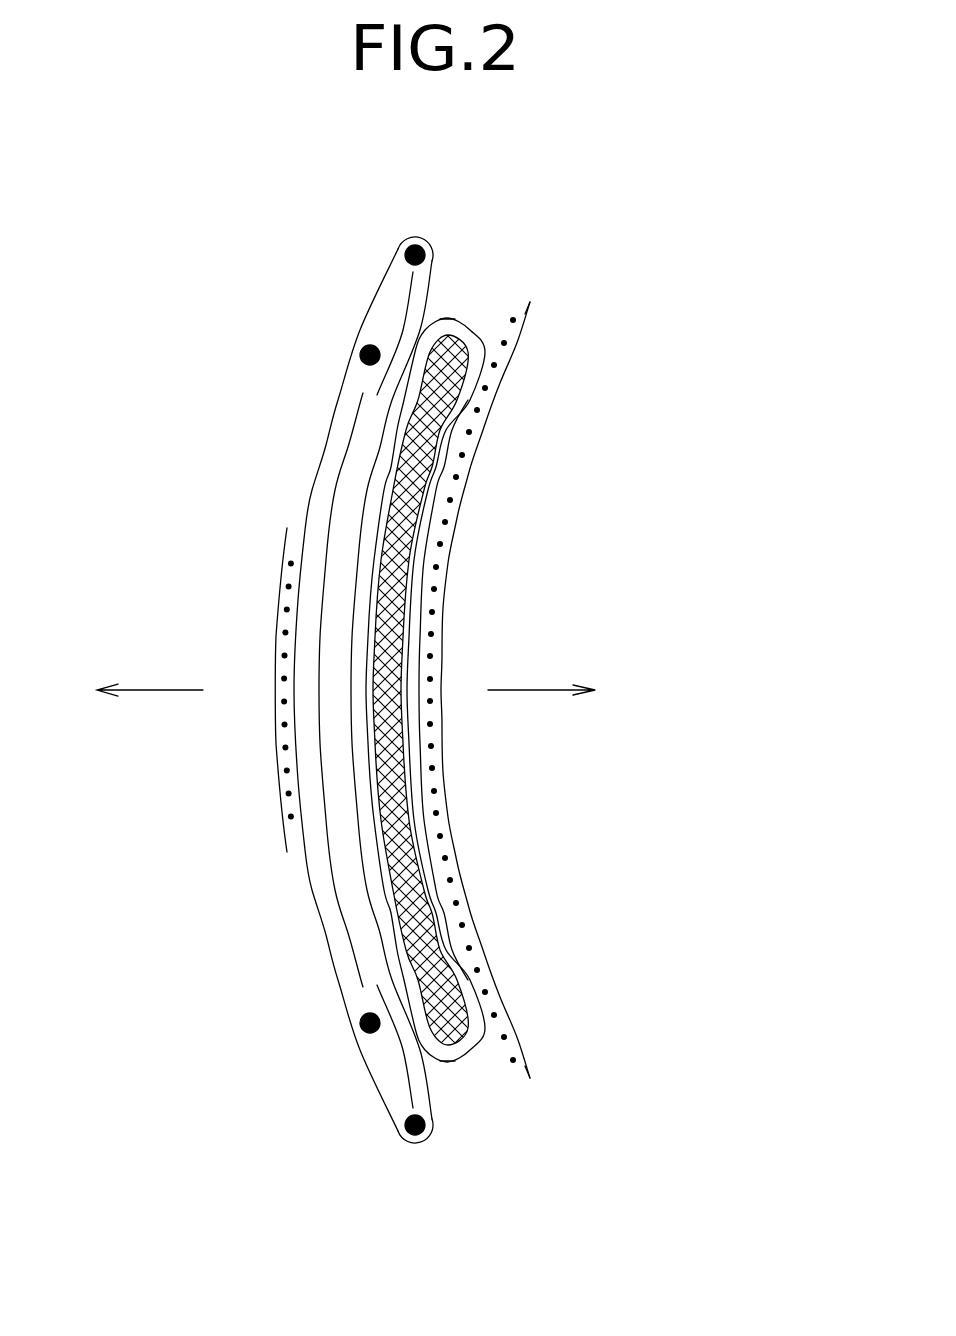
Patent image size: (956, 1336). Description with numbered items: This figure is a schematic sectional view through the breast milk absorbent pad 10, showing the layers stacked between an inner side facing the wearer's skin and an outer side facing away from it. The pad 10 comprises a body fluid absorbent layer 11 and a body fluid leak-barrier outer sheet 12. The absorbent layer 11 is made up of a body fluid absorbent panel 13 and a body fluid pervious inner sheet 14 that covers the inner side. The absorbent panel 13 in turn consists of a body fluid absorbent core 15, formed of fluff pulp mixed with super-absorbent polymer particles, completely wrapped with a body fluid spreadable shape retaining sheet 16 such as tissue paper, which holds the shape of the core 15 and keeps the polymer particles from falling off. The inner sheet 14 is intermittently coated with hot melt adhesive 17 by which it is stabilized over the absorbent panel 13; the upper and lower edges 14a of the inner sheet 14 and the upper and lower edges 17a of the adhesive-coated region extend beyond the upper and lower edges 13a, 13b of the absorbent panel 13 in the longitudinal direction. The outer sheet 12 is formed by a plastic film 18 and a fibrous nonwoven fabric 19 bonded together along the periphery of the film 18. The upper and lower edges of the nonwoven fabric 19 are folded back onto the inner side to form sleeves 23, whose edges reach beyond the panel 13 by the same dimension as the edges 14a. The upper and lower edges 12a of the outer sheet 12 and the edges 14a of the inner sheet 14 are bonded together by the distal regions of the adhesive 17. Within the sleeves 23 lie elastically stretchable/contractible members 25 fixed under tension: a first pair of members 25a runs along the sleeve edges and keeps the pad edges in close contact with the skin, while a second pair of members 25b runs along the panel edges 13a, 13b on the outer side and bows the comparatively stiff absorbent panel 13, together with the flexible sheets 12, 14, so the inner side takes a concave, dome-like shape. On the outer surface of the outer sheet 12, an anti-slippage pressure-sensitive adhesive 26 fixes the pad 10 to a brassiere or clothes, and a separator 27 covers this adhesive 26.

The breast milk absorbent pad 10 is at (210, 334).
The body fluid absorbent layer 11 is at (582, 131).
The body fluid leak-barrier outer sheet 12 is at (216, 398).
The upper and lower edges of outer sheet 12a is at (409, 239).
The body fluid absorbent panel 13 is at (526, 179).
The upper edge of body fluid absorbent panel 13a is at (456, 318).
The lower edge of body fluid absorbent panel 13b is at (457, 1063).
The body fluid pervious inner sheet 14 is at (548, 300).
The upper and lower edges of inner sheet 14a is at (535, 310).
The body fluid absorbent core 15 is at (468, 316).
The body fluid spreadable shape retaining sheet 16 is at (451, 333).
The hot melt adhesive 17 is at (437, 585).
The upper and lower edges of adhesive-coated region 17a is at (518, 322).
The plastic film 18 is at (353, 423).
The fibrous nonwoven fabric 19 is at (317, 473).
The sleeves 23 is at (393, 303).
The elastically stretchable/contractible members 25 is at (216, 203).
The first pair of elastically stretchable/contractible members 25a is at (405, 250).
The second pair of elastically stretchable/contractible members 25b is at (362, 355).
The anti-slippage pressure-sensitive adhesive 26 is at (292, 818).
The separator 27 is at (273, 638).